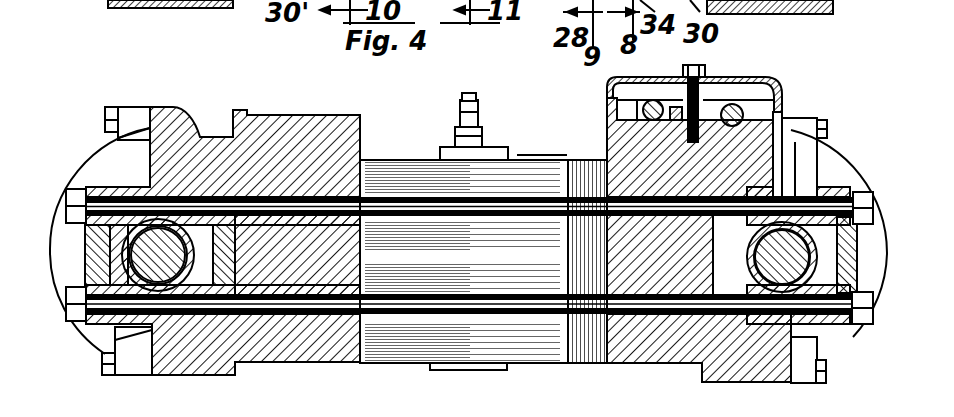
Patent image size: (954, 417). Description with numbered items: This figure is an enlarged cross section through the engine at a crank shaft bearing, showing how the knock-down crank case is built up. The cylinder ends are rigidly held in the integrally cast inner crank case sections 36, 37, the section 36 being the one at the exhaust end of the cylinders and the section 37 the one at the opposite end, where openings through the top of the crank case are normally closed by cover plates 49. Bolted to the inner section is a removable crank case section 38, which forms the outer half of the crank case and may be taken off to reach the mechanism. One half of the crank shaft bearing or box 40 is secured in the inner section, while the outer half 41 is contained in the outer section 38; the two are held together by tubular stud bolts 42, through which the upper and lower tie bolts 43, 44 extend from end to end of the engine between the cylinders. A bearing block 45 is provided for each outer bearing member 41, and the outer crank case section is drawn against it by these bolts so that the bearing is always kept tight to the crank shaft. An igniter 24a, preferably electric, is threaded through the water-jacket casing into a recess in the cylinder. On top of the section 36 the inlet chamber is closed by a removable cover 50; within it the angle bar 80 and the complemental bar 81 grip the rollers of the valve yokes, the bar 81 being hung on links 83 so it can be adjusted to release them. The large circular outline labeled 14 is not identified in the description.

The hub 14 is at (826, 187).
The igniter 24a is at (478, 122).
The inner crank case section 36 is at (783, 118).
The inner crank case section 37 is at (260, 133).
The removable crank case section 38 is at (873, 222).
The bearing or box half 40 is at (826, 135).
The outer bearing half 41 is at (812, 270).
The tubular stud bolt 42 is at (791, 170).
The upper tie bolt 43 is at (390, 205).
The lower tie bolt 44 is at (122, 324).
The bearing block 45 is at (820, 248).
The cover plate 49 is at (300, 128).
The removable cover 50 is at (750, 80).
The angle bar 80 is at (662, 100).
The complemental bar 81 is at (615, 100).
The link 83 is at (612, 125).